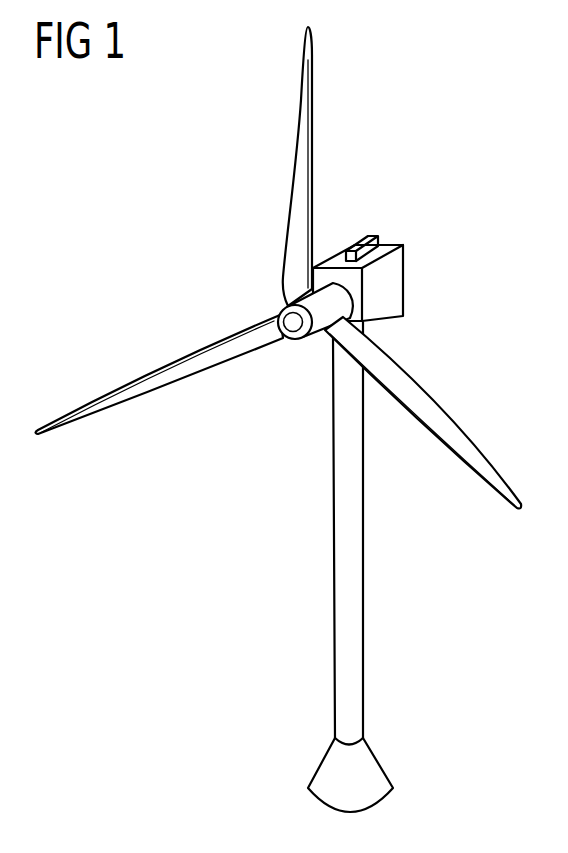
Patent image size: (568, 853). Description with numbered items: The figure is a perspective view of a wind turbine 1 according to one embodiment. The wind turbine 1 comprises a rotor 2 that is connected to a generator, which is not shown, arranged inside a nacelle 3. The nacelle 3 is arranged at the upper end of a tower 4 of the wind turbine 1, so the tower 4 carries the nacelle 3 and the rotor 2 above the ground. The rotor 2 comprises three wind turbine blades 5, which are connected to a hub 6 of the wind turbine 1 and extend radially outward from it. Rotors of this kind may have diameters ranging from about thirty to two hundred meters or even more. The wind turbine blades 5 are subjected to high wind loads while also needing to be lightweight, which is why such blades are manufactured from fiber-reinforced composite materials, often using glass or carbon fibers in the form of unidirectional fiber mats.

The wind turbine 1 is at (146, 186).
The rotor 2 is at (134, 358).
The nacelle 3 is at (390, 282).
The tower 4 is at (350, 647).
The wind turbine blade 5 is at (300, 163).
The hub 6 is at (337, 302).